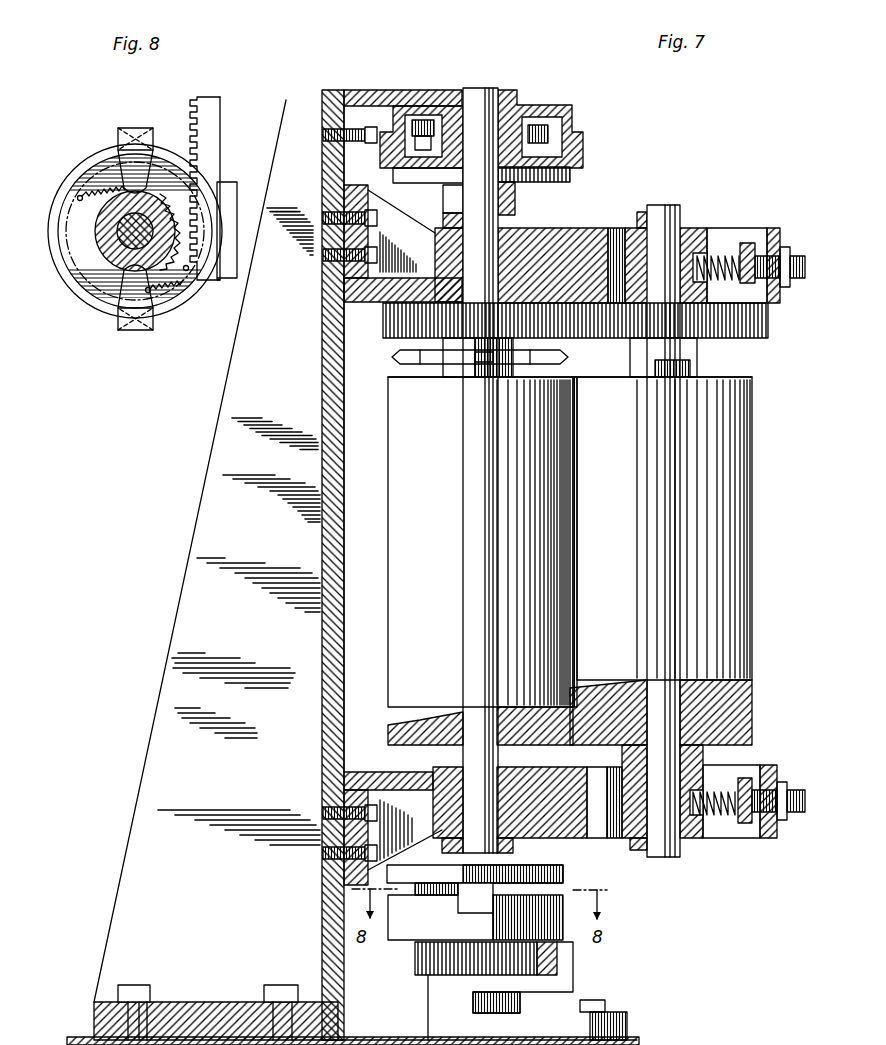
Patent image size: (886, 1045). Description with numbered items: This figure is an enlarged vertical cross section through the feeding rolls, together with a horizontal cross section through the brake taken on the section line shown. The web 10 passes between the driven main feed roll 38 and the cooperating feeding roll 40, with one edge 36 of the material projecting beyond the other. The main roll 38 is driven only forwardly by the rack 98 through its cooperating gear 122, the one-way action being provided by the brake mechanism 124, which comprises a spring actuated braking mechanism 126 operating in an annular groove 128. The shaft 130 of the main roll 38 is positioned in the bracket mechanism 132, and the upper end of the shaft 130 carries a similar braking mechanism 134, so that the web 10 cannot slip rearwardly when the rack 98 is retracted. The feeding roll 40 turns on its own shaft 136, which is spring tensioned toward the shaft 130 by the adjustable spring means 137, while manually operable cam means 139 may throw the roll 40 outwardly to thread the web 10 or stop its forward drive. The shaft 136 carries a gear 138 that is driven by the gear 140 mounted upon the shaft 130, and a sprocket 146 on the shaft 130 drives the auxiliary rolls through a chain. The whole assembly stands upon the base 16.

In FIG. 7, the web 10 is at (578, 436).
In FIG. 7, the base 16 is at (637, 1042).
In FIG. 7, the edge 36 is at (572, 380).
In FIG. 7, the driven main feed roll 38 is at (480, 561).
In FIG. 7, the feeding roll 40 is at (661, 561).
In FIG. 7, the rack 98 is at (545, 966).
In FIG. 7, the gear 122 is at (415, 965).
In FIG. 8, the brake mechanism 124 is at (172, 320).
In FIG. 7, the brake mechanism 124 is at (403, 945).
In FIG. 8, the spring actuated braking mechanism 126 is at (118, 150).
In FIG. 7, the spring actuated braking mechanism 126 is at (470, 903).
In FIG. 8, the annular groove 128 is at (97, 253).
In FIG. 8, the shaft 130 is at (135, 231).
In FIG. 7, the shaft 130 is at (480, 244).
In FIG. 7, the bracket mechanism 132 is at (323, 106).
In FIG. 7, the braking mechanism 134 is at (520, 117).
In FIG. 7, the shaft 136 is at (660, 213).
In FIG. 7, the adjustable spring means 137 is at (748, 242).
In FIG. 7, the gear 138 is at (763, 327).
In FIG. 7, the manually operable cam means 139 is at (641, 210).
In FIG. 7, the gear 140 is at (383, 322).
In FIG. 7, the sprocket 146 is at (390, 360).